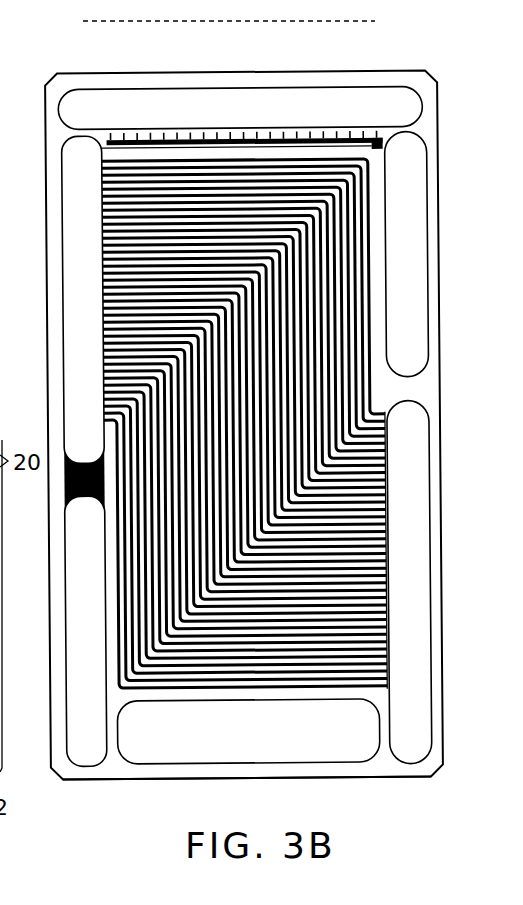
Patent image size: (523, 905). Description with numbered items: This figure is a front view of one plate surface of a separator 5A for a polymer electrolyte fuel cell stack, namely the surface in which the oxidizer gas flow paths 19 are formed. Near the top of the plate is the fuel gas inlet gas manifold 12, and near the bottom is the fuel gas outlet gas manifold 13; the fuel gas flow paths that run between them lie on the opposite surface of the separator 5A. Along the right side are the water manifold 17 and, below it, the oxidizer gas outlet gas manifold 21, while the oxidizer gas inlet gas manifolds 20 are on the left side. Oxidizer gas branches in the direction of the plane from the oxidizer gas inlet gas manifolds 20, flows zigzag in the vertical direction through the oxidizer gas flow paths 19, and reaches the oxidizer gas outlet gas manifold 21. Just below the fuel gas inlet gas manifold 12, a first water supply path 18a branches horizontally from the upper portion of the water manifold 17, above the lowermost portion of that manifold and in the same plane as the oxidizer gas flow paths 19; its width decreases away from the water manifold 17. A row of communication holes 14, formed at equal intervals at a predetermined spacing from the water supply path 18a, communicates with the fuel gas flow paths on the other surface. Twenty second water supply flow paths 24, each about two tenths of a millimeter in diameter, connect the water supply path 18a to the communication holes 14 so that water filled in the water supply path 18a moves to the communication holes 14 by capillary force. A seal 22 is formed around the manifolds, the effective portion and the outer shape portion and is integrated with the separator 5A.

The separator 5A is at (440, 348).
The fuel gas inlet gas manifold 12 is at (115, 107).
The fuel gas outlet gas manifold 13 is at (167, 750).
The communication holes 14 is at (108, 138).
The water manifold 17 is at (405, 220).
The first water supply path 18a is at (377, 138).
The oxidizer gas flow paths 19 is at (378, 392).
The oxidizer gas inlet gas manifolds 20 is at (77, 537).
The oxidizer gas outlet gas manifold 21 is at (418, 608).
The seal 22 is at (108, 768).
The second water supply flow paths 24 is at (292, 138).